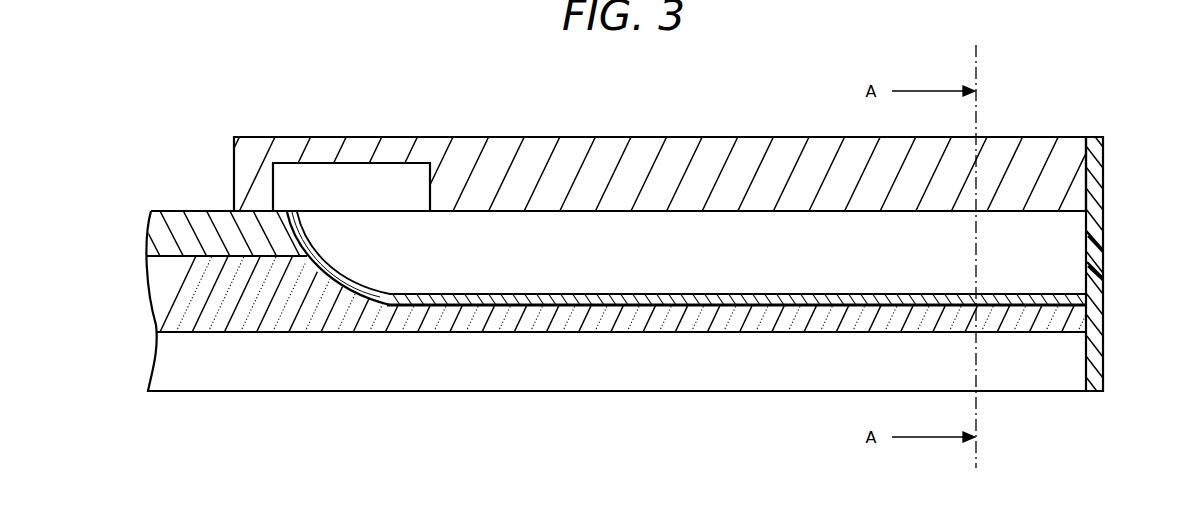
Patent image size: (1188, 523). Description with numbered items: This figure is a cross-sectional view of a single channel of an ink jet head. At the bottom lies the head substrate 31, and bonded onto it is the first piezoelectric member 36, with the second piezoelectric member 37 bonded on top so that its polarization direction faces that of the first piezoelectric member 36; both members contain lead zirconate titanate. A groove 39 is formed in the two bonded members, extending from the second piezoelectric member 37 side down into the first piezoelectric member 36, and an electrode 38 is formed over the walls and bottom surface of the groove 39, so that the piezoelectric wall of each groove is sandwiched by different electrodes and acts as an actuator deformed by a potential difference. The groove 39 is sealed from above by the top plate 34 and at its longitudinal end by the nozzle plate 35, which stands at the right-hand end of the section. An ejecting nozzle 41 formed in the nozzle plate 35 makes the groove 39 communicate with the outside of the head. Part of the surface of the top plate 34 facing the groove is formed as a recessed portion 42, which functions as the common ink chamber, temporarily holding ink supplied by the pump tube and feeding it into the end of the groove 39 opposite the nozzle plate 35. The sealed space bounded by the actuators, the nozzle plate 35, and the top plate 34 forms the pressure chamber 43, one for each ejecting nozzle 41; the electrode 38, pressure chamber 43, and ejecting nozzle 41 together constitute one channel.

The head substrate 31 is at (1032, 377).
The top plate 34 is at (1030, 150).
The nozzle plate 35 is at (1094, 183).
The first piezoelectric member 36 is at (157, 288).
The second piezoelectric member 37 is at (157, 242).
The electrode 38 is at (607, 230).
The groove 39 is at (843, 292).
The ejecting nozzle 41 is at (1094, 253).
The recessed portion 42 is at (417, 163).
The pressure chamber 43 is at (720, 257).